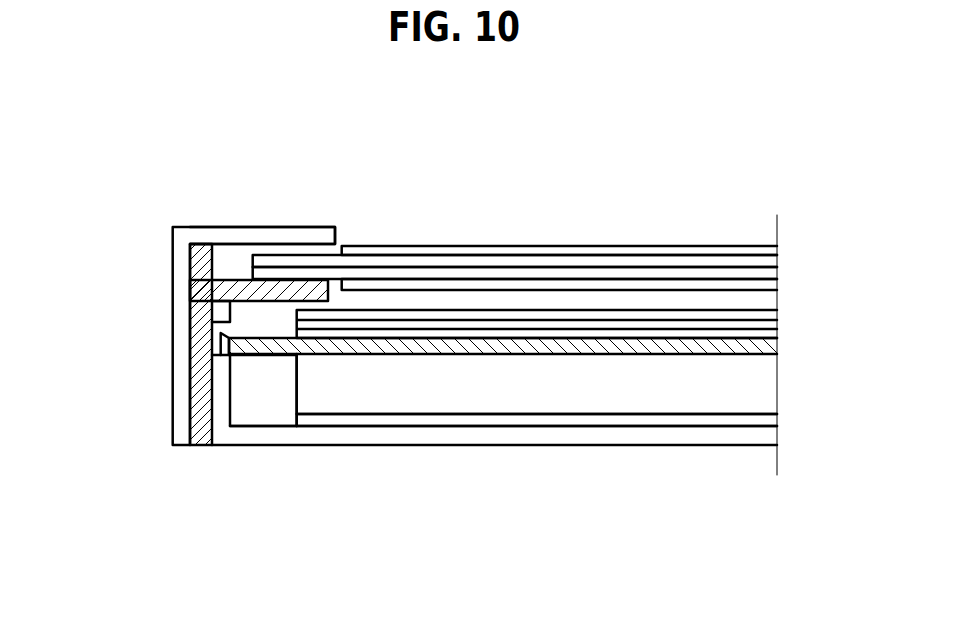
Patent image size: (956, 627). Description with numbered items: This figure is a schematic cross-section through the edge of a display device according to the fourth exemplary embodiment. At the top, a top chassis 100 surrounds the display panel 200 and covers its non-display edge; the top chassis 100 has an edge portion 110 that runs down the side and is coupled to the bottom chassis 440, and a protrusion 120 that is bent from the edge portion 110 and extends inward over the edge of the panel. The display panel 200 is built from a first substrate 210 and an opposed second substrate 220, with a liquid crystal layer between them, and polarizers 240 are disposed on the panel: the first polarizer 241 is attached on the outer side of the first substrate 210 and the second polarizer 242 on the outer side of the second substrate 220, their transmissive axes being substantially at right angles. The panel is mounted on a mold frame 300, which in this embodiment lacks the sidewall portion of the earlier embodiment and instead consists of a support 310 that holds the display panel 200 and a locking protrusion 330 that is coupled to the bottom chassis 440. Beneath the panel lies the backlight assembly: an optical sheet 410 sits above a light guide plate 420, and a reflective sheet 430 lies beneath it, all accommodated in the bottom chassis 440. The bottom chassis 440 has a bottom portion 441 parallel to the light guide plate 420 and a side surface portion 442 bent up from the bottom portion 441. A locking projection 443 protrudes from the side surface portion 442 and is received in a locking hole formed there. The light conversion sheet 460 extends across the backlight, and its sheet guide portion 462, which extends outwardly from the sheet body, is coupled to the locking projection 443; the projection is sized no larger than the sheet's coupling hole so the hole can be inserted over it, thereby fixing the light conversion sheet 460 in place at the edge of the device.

The top chassis 100 is at (255, 140).
The edge portion 110 is at (178, 268).
The protrusion 120 is at (250, 240).
The display panel 200 is at (495, 173).
The first substrate 210 is at (494, 272).
The second substrate 220 is at (404, 263).
The polarizers 240 is at (680, 173).
The first polarizer 241 is at (680, 286).
The second polarizer 242 is at (586, 250).
The mold frame 300 is at (85, 290).
The support 310 is at (238, 291).
The locking protrusion 330 is at (212, 341).
The optical sheet 410 is at (785, 310).
The light guide plate 420 is at (763, 387).
The reflective sheet 430 is at (763, 423).
The bottom chassis 440 is at (327, 517).
The bottom portion 441 is at (325, 432).
The side surface portion 442 is at (218, 409).
The locking projection 443 is at (230, 345).
The light conversion sheet 460 is at (772, 345).
The sheet guide portion 462 is at (147, 398).